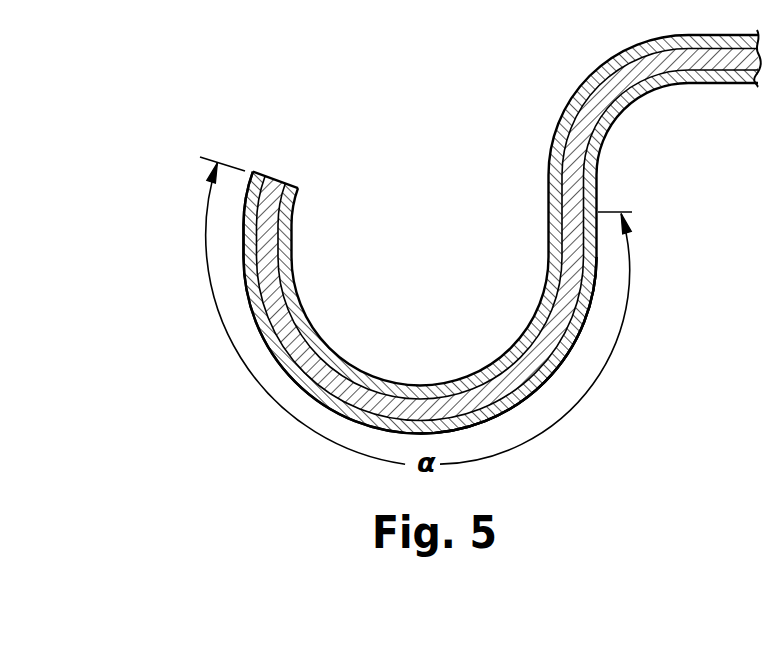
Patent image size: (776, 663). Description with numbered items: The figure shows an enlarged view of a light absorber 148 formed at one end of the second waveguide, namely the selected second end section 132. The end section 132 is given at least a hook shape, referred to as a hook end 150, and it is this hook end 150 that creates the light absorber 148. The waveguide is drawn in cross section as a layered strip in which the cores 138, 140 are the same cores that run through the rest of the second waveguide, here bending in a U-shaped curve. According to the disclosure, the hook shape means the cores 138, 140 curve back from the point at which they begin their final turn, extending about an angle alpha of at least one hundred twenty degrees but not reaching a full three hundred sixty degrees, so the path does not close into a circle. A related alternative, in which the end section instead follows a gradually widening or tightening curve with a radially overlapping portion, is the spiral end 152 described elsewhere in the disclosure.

The second end section 132 is at (501, 232).
The core 138 is at (586, 319).
The core 140 is at (572, 273).
The light absorber 148 is at (550, 381).
The hook end 150 is at (578, 363).
The spiral end 152 is at (245, 298).